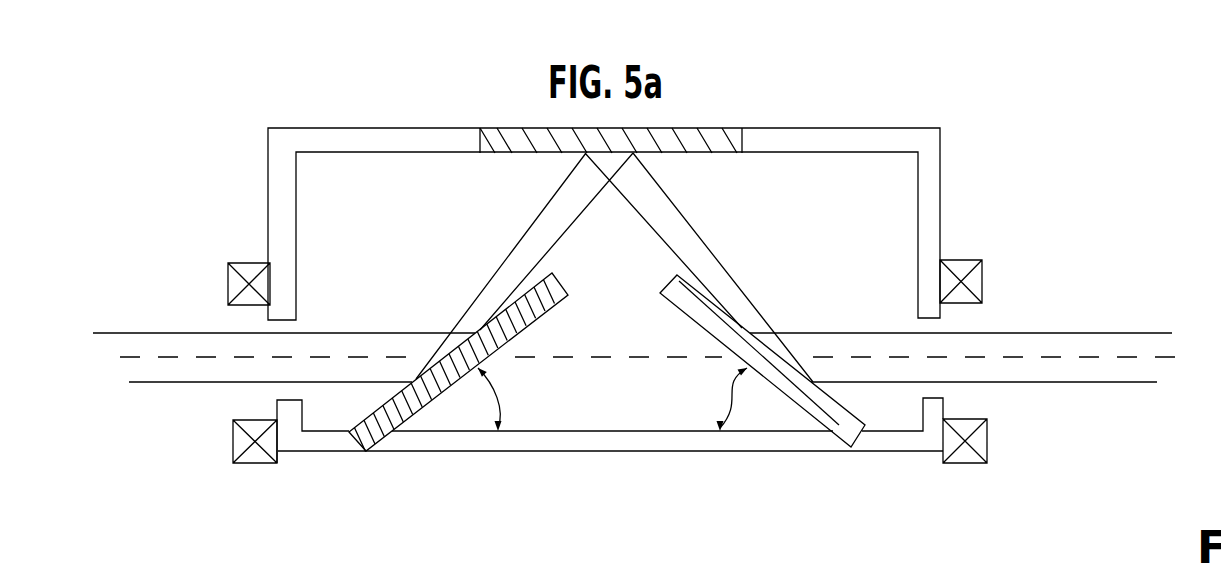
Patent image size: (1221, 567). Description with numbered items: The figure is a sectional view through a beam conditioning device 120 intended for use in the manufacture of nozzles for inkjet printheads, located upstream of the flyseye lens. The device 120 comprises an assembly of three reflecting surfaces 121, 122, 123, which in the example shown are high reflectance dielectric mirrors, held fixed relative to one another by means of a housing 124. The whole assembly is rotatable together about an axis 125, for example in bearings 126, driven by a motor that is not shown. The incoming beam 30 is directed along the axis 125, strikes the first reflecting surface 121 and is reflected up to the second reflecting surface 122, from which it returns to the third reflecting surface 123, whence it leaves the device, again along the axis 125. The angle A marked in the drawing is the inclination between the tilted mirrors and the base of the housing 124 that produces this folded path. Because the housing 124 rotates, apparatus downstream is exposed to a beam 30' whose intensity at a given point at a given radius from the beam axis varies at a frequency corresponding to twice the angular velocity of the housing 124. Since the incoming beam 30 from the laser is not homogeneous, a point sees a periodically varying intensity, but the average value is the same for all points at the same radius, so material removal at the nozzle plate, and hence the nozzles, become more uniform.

The beam conditioning device 120 is at (353, 107).
The first reflecting surface 121 is at (402, 412).
The second reflecting surface 122 is at (712, 135).
The third reflecting surface 123 is at (837, 433).
The housing 124 is at (928, 141).
The axis 125 is at (1194, 352).
The bearings 126 is at (962, 272).
The incoming beam 30 is at (632, 313).
The conditioned beam 30' is at (643, 399).
The tilt angle A is at (462, 405).